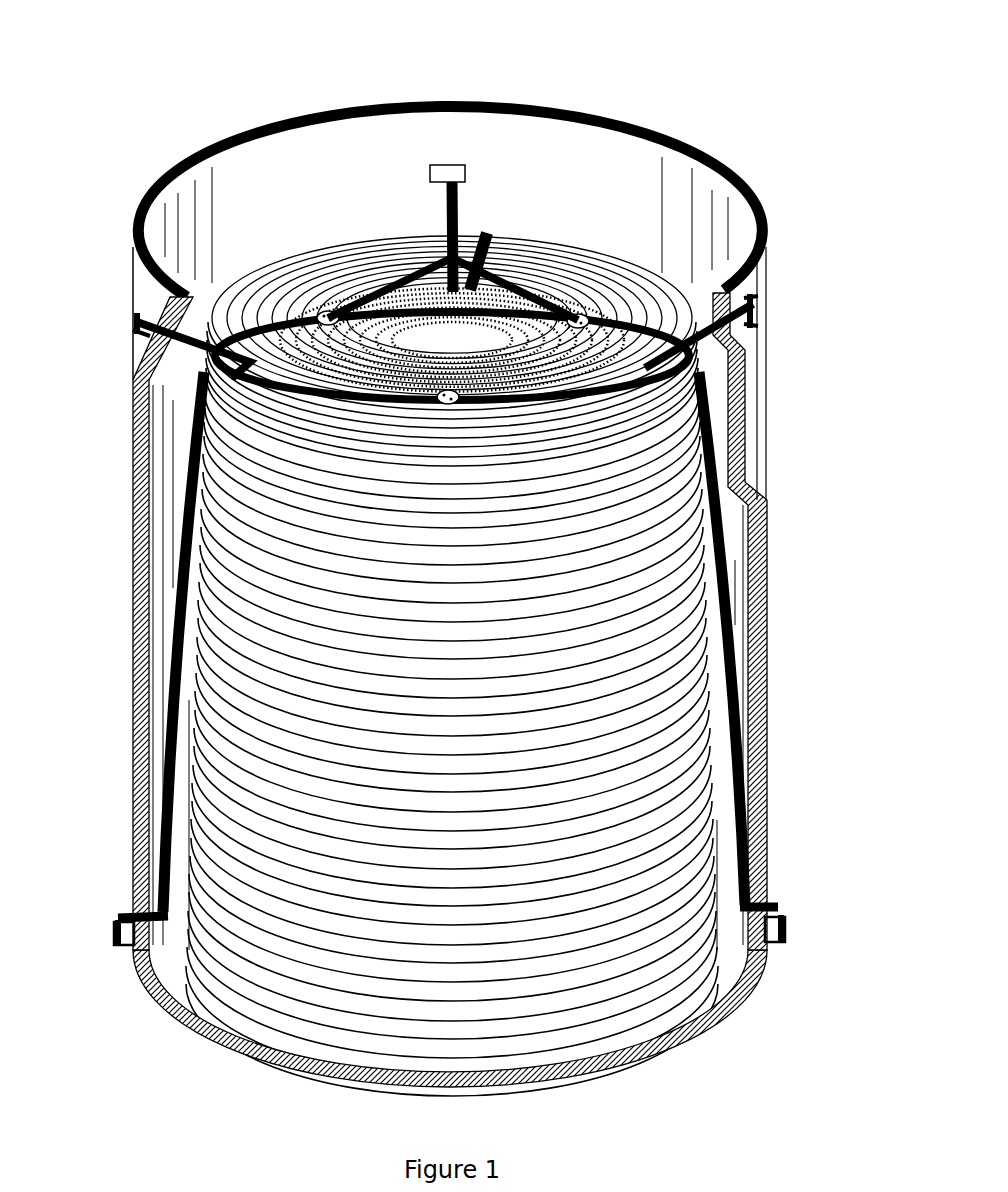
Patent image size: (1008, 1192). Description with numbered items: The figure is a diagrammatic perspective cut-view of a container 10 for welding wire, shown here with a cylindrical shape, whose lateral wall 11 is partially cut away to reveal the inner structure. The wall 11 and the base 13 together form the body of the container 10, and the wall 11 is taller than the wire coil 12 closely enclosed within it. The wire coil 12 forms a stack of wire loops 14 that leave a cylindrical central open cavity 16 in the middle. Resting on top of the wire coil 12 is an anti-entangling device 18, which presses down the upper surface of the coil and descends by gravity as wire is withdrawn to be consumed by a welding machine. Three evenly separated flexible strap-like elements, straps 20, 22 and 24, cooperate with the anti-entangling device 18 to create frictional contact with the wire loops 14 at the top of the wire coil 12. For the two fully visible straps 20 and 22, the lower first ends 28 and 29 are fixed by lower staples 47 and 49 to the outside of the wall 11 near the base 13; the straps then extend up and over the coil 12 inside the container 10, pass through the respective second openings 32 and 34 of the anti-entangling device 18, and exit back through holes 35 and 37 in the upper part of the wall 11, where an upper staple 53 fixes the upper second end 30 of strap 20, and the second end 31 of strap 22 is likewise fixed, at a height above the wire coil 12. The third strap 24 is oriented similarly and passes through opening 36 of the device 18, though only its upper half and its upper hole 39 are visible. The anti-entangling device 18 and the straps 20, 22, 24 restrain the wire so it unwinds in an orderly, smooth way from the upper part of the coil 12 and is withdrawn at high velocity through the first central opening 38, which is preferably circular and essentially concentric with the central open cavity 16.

The container 10 is at (766, 152).
The lateral wall 11 is at (770, 478).
The wire coil 12 is at (648, 775).
The base 13 is at (720, 994).
The wire loops 14 is at (298, 282).
The cylindrical central open cavity 16 is at (482, 342).
The anti-entangling device 18 is at (355, 275).
The flexible strap 20 is at (730, 650).
The flexible strap 22 is at (172, 742).
The third strap 24 is at (466, 207).
The first end of strap 28 is at (776, 907).
The first end of strap 29 is at (117, 917).
The second end of strap 30 is at (755, 303).
The second end of strap 31 is at (143, 310).
The second opening 32 is at (625, 355).
The second opening 34 is at (254, 346).
The hole 35 is at (764, 299).
The opening 36 is at (418, 285).
The hole 37 is at (145, 343).
The first central opening 38 is at (572, 342).
The upper hole 39 is at (452, 166).
The lower staple 47 is at (788, 933).
The lower staple 49 is at (116, 937).
The upper staple 53 is at (761, 325).